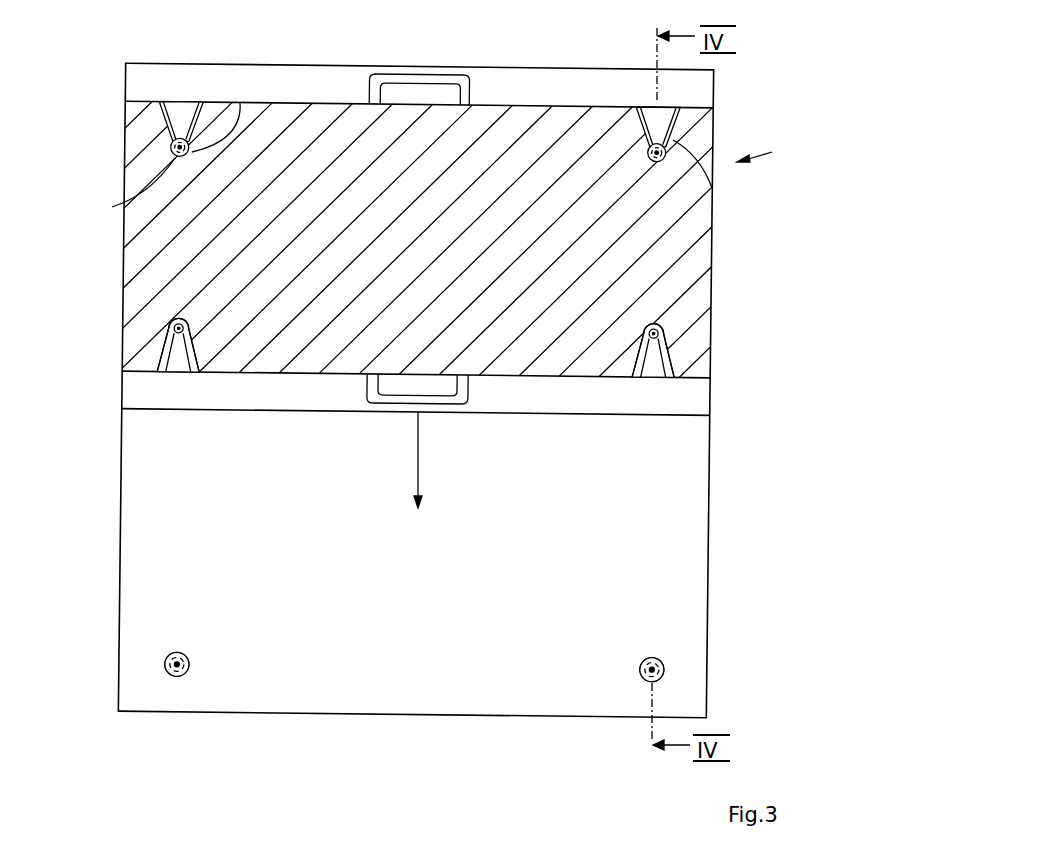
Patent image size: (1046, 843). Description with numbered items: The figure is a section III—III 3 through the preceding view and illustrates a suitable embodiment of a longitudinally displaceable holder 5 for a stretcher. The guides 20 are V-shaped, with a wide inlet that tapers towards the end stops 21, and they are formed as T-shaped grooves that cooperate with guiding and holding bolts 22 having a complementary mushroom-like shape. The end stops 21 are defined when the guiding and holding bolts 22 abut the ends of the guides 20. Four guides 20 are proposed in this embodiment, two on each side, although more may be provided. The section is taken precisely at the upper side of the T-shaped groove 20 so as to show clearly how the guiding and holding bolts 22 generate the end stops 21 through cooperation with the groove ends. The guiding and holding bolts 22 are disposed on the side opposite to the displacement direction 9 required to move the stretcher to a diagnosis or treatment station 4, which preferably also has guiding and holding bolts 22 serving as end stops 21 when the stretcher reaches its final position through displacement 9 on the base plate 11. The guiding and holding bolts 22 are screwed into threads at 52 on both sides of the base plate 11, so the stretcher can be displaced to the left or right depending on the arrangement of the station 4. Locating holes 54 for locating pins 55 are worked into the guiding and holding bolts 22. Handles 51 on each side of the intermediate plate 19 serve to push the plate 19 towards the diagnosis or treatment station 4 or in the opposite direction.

The section III—III 3 is at (496, 390).
The base plate 11 is at (496, 390).
The intermediate plate 19 is at (688, 95).
The diagnosis or treatment station 4 is at (665, 535).
The longitudinally displaceable holder 5 is at (774, 153).
The displacement direction 9 is at (418, 455).
The guide 20 is at (160, 105).
The end stop 21 is at (240, 102).
The guiding and holding bolt 22 is at (112, 207).
The handle 51 is at (417, 82).
The thread 52 is at (163, 350).
The locating hole 54 is at (414, 410).
The locating pin 55 is at (170, 150).